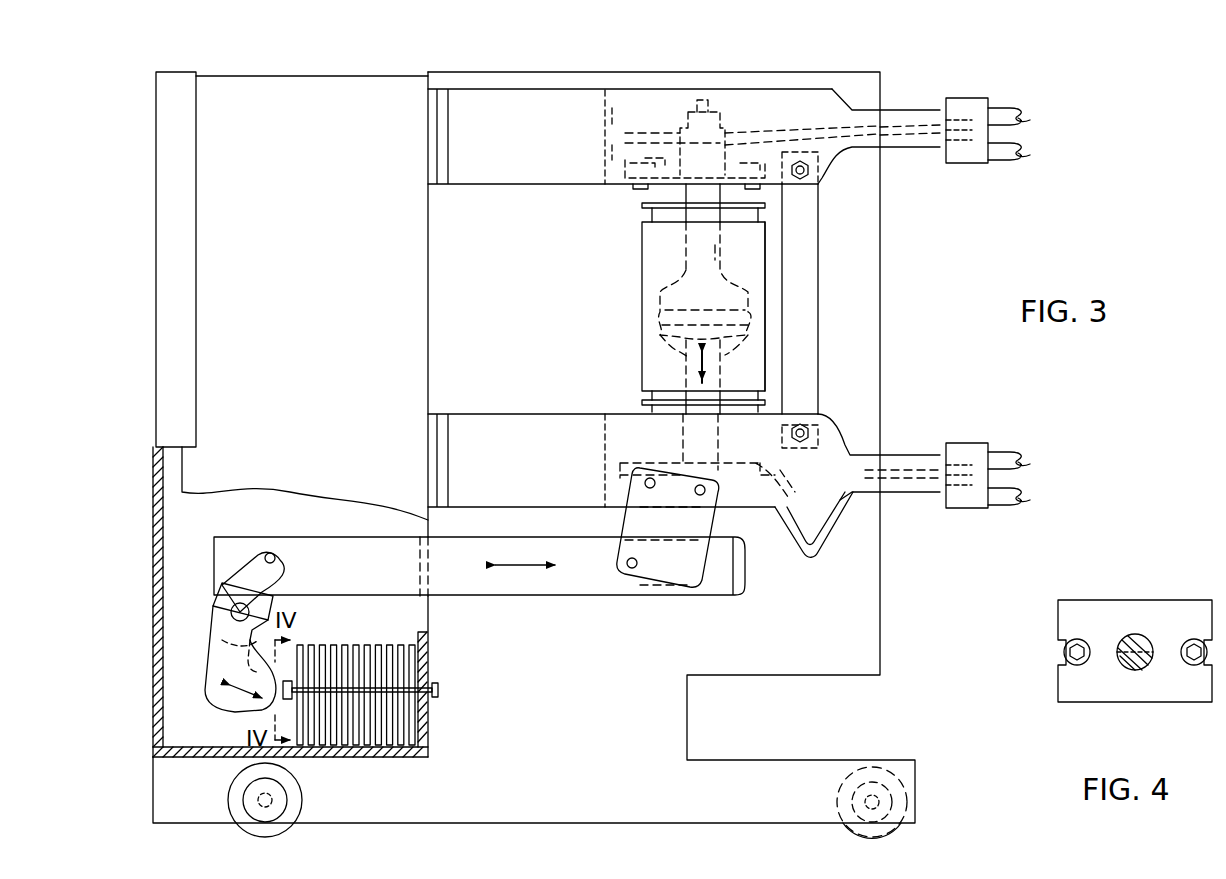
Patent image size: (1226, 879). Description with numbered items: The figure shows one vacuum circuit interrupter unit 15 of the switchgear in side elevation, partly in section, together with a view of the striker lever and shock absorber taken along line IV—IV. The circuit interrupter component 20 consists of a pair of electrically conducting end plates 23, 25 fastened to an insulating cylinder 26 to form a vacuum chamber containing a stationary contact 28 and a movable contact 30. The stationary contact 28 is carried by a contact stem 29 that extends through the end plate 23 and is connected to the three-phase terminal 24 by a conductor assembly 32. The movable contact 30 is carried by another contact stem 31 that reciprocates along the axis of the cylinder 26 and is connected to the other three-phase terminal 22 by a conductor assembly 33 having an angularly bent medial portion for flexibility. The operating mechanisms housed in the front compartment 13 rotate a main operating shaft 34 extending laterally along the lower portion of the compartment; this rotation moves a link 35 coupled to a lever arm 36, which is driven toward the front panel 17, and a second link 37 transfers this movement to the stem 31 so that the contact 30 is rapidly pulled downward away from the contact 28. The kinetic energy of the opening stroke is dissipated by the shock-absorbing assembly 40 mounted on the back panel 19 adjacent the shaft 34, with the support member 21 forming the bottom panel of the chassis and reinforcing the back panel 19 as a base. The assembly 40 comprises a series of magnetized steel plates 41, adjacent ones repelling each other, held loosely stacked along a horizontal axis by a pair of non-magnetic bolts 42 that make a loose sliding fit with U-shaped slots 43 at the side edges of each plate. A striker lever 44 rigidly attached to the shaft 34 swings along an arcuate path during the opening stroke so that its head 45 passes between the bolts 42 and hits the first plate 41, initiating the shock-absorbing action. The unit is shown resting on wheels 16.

In FIG. 3, the front compartment 13 is at (172, 585).
In FIG. 3, the circuit interrupter unit 15 is at (112, 108).
In FIG. 3, the wheels 16 is at (292, 800).
In FIG. 3, the front panel 17 is at (152, 535).
In FIG. 3, the back panel 19 is at (426, 640).
In FIG. 3, the circuit interrupter component 20 is at (636, 270).
In FIG. 3, the support member 21 is at (420, 752).
In FIG. 3, the three-phase terminal 22 is at (968, 443).
In FIG. 3, the end plate 23 is at (642, 204).
In FIG. 3, the three-phase terminal 24 is at (975, 160).
In FIG. 3, the end plate 25 is at (642, 402).
In FIG. 3, the insulating cylinder 26 is at (765, 290).
In FIG. 3, the stationary contact 28 is at (660, 297).
In FIG. 3, the contact stem 29 is at (720, 245).
In FIG. 3, the movable contact 30 is at (655, 330).
In FIG. 3, the contact stem 31 is at (713, 368).
In FIG. 3, the conductor assembly 32 is at (880, 125).
In FIG. 3, the conductor assembly 33 is at (825, 530).
In FIG. 3, the main operating shaft 34 is at (232, 612).
In FIG. 3, the link 35 is at (270, 578).
In FIG. 3, the lever arm 36 is at (545, 585).
In FIG. 3, the second link 37 is at (680, 582).
In FIG. 3, the shock-absorbing assembly 40 is at (392, 718).
In FIG. 4, the shock-absorbing assembly 40 is at (1185, 582).
In FIG. 3, the steel plates 41 is at (358, 648).
In FIG. 4, the steel plates 41 is at (1070, 612).
In FIG. 3, the bolts 42 is at (385, 690).
In FIG. 4, the bolts 42 is at (1070, 662).
In FIG. 4, the U-shaped slots 43 is at (1062, 652).
In FIG. 3, the striker lever 44 is at (210, 692).
In FIG. 4, the striker lever 44 is at (1135, 635).
In FIG. 3, the head 45 is at (262, 705).
In FIG. 4, the head 45 is at (1125, 660).